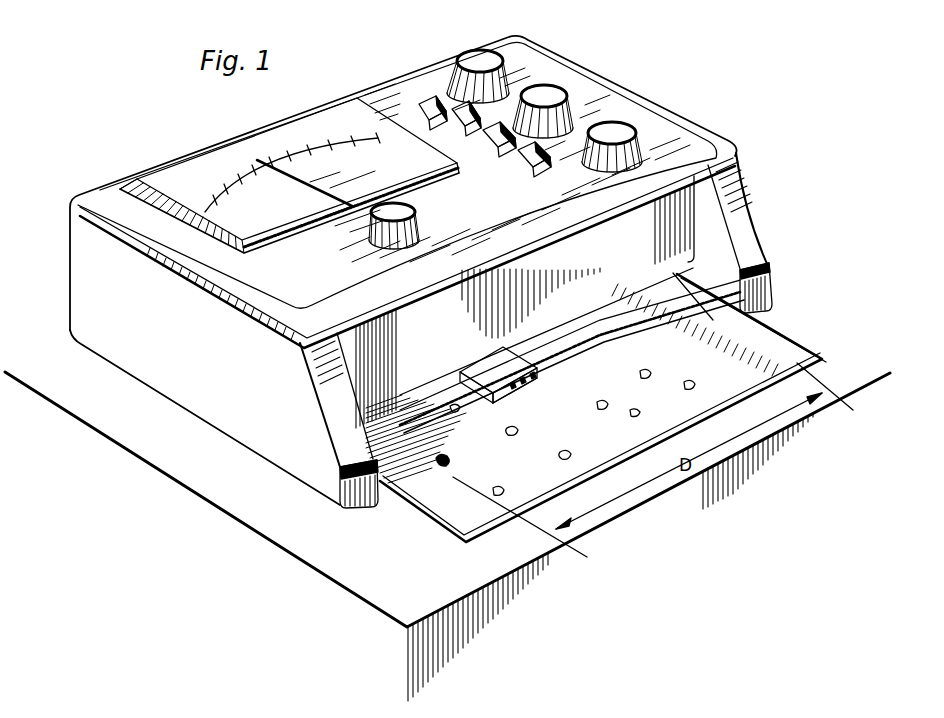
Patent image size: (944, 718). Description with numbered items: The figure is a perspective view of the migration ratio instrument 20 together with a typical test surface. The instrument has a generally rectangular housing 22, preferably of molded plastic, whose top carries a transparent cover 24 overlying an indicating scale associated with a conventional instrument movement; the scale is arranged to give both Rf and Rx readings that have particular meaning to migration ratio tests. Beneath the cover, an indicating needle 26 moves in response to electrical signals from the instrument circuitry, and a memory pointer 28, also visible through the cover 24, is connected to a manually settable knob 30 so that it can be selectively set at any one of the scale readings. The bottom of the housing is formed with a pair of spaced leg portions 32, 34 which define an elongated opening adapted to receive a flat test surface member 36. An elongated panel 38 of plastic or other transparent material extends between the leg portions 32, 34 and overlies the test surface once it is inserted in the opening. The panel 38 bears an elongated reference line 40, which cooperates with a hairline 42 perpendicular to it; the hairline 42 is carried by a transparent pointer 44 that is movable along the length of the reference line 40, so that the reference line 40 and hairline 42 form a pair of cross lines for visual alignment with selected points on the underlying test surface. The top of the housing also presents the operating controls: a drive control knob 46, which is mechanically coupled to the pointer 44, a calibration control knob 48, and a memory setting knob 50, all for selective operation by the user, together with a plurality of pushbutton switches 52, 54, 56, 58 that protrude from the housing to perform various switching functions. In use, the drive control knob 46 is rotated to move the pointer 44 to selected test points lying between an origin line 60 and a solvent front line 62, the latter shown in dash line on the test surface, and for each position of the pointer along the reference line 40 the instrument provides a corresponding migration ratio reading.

The migration ratio instrument 20 is at (586, 51).
The housing 22 is at (737, 155).
The transparent cover 24 is at (167, 174).
The indicating needle 26 is at (264, 240).
The memory pointer 28 is at (311, 147).
The manually settable knob 30 is at (394, 242).
The leg portion 32 is at (355, 512).
The leg portion 34 is at (765, 283).
The test surface member 36 is at (443, 516).
The elongated panel 38 is at (418, 403).
The reference line 40 is at (550, 346).
The hairline 42 is at (490, 368).
The transparent pointer 44 is at (533, 395).
The drive control knob 46 is at (628, 128).
The calibration control knob 48 is at (566, 103).
The memory setting knob 50 is at (500, 46).
The pushbutton switch 52 is at (531, 172).
The pushbutton switch 54 is at (500, 158).
The pushbutton switch 56 is at (472, 145).
The pushbutton switch 58 is at (425, 102).
The origin line 60 is at (446, 463).
The solvent front line 62 is at (716, 330).